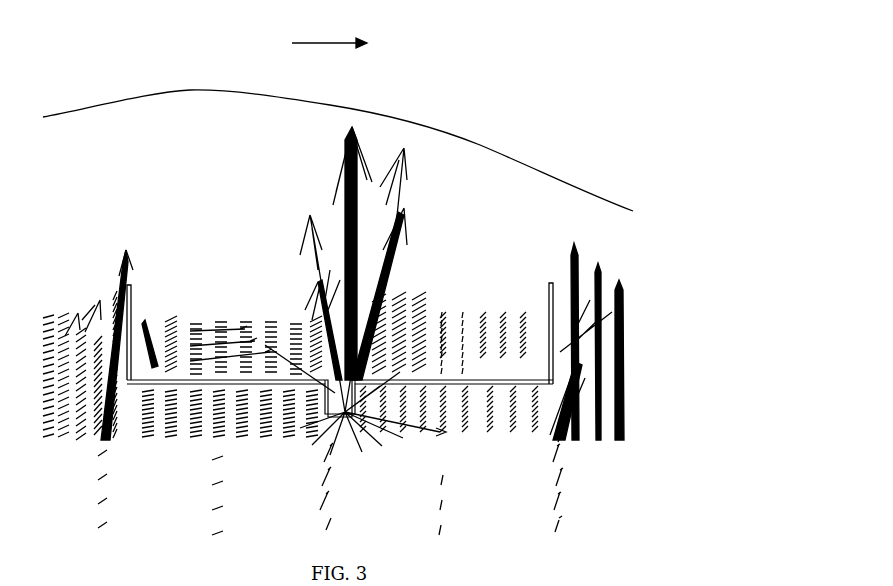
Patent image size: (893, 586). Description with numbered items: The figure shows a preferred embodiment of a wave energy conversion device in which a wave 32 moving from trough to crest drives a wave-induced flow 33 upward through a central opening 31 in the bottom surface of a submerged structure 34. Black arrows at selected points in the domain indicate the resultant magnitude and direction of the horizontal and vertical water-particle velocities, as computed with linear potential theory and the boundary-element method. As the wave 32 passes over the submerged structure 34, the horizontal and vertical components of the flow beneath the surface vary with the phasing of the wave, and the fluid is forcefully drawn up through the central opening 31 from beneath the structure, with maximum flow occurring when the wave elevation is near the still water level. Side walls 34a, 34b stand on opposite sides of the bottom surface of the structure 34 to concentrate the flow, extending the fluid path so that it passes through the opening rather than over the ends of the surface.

The central opening 31 is at (345, 412).
The wave 32 is at (433, 125).
The wave-induced flow 33 is at (350, 235).
The submerged structure 34 is at (190, 387).
The side wall 34a is at (131, 320).
The side wall 34b is at (549, 320).